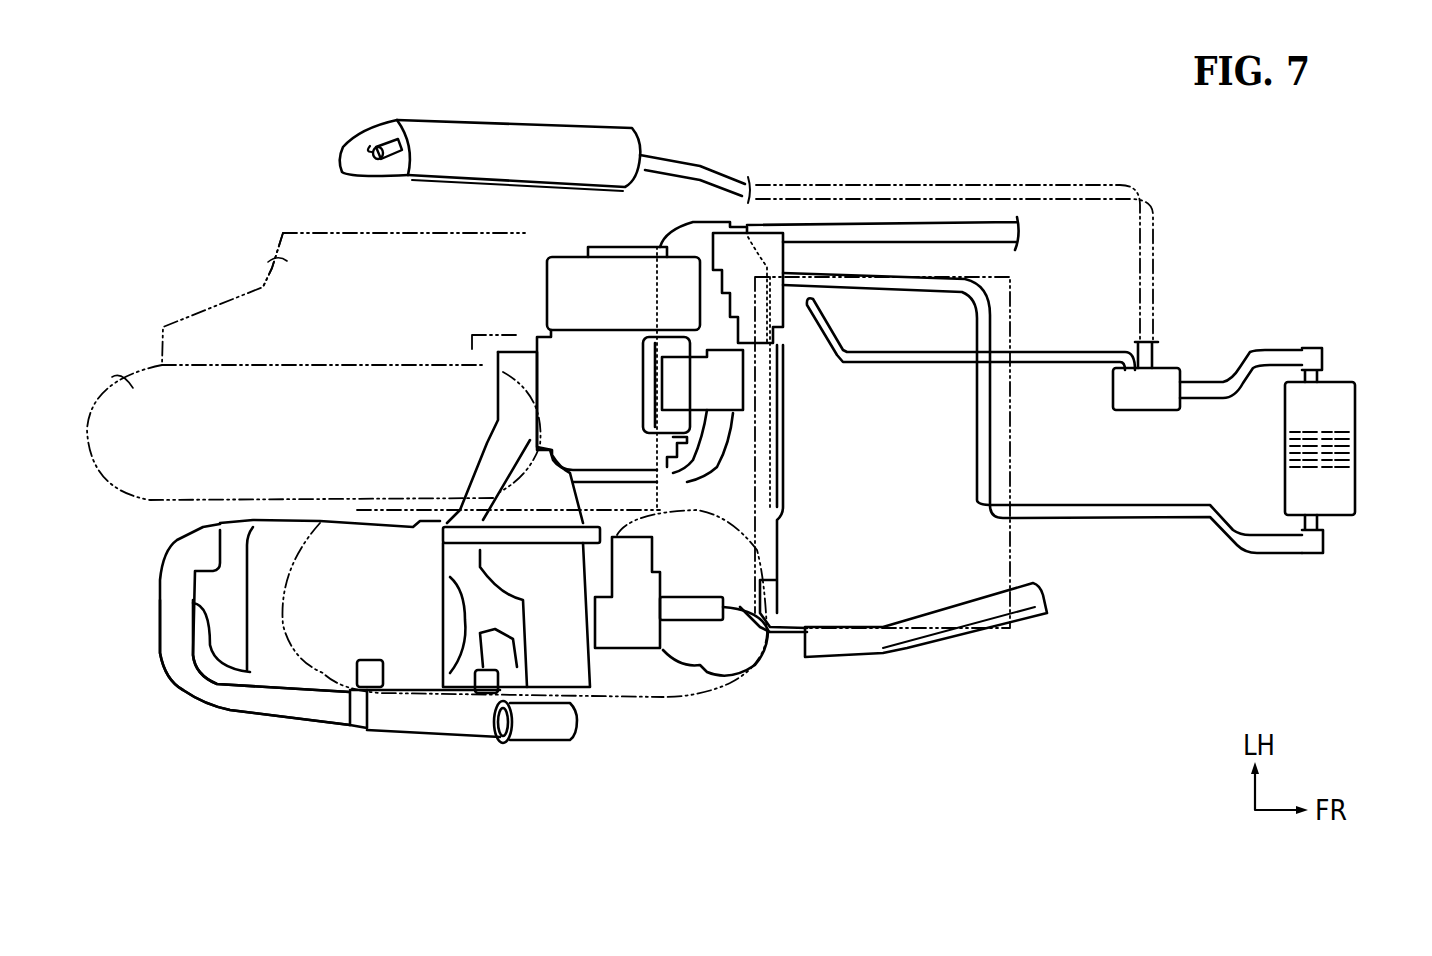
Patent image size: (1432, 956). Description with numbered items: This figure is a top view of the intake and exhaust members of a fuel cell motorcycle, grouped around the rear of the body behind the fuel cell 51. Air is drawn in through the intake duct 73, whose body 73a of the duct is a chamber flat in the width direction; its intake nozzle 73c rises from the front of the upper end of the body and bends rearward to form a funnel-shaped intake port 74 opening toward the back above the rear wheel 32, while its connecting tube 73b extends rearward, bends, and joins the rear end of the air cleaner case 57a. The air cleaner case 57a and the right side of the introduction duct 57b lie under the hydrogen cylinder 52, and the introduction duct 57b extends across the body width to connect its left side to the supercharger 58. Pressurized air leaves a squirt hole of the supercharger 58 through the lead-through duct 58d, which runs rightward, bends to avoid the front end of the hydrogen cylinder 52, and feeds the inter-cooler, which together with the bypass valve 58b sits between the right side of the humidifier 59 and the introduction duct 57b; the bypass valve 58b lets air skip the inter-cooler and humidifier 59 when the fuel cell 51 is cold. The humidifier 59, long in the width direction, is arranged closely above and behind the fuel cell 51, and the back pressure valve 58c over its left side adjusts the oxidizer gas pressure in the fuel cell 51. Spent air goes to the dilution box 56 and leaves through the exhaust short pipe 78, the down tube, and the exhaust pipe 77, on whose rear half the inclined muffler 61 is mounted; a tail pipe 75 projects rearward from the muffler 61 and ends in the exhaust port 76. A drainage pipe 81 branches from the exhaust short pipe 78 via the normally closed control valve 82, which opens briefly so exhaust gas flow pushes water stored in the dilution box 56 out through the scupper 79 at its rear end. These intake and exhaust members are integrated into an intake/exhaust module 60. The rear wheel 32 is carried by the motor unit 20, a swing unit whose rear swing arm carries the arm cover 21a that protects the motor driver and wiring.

The motor unit 20 is at (305, 225).
The arm cover 21a is at (272, 257).
The rear wheel 32 is at (120, 375).
The fuel cell 51 is at (1020, 447).
The hydrogen cylinder 52 is at (667, 707).
The dilution box 56 is at (1350, 486).
The air cleaner case 57a is at (270, 527).
The introduction duct 57b is at (487, 455).
The supercharger 58 is at (560, 300).
The bypass valve 58b is at (627, 640).
The back pressure valve 58c is at (720, 253).
The lead-through duct 58d is at (768, 487).
The humidifier 59 is at (778, 467).
The intake/exhaust module 60 is at (724, 718).
The muffler 61 is at (545, 122).
The intake duct 73 is at (372, 724).
The body of the duct 73a is at (425, 722).
The connecting tube 73b is at (272, 722).
The intake nozzle 73c is at (545, 742).
The intake port 74 is at (500, 740).
The tail pipe 75 is at (388, 146).
The exhaust port 76 is at (372, 150).
The exhaust pipe 77 is at (703, 150).
The exhaust short pipe 78 is at (1203, 385).
The scupper 79 is at (797, 305).
The drainage pipe 81 is at (893, 363).
The control valve 82 is at (1148, 408).